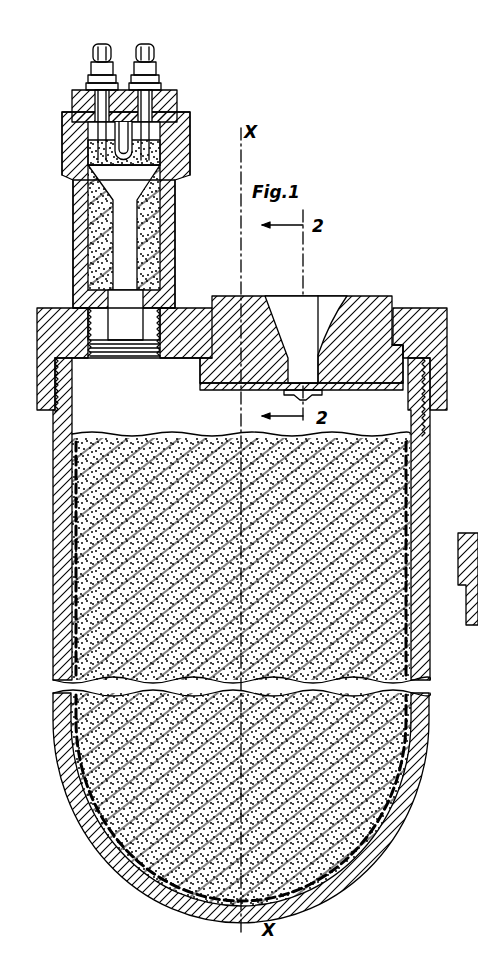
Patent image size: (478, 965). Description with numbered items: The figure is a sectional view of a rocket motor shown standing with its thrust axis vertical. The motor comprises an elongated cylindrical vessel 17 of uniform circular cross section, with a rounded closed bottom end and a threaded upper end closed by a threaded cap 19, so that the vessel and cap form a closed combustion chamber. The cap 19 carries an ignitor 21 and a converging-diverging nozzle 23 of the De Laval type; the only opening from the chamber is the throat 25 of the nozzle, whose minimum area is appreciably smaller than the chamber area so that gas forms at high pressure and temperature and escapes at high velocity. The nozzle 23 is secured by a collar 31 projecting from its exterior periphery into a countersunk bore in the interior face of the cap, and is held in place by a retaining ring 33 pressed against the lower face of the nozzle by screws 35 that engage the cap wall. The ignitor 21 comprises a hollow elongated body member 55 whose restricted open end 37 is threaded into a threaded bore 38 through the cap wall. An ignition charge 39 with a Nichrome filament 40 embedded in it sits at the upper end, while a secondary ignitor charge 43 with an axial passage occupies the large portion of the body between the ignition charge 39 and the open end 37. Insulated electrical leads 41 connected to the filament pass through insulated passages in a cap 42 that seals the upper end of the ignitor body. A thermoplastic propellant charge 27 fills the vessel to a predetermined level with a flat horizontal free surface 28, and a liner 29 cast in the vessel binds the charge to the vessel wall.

The vessel 17 is at (62, 625).
The threaded cap 19 is at (430, 310).
The ignitor 21 is at (186, 160).
The nozzle 23 is at (372, 300).
The throat 25 is at (316, 330).
The propellant charge 27 is at (382, 505).
The free surface 28 is at (170, 436).
The liner 29 is at (428, 456).
The collar 31 is at (401, 343).
The retaining ring 33 is at (387, 392).
The screws 35 is at (313, 398).
The restricted open end 37 is at (180, 310).
The threaded bore 38 is at (97, 357).
The ignition charge 39 is at (191, 120).
The Nichrome filament 40 is at (86, 152).
The insulated electrical leads 41 is at (157, 46).
The cap 42 is at (178, 96).
The secondary ignitor charge 43 is at (105, 410).
The hollow elongated body member 55 is at (73, 240).